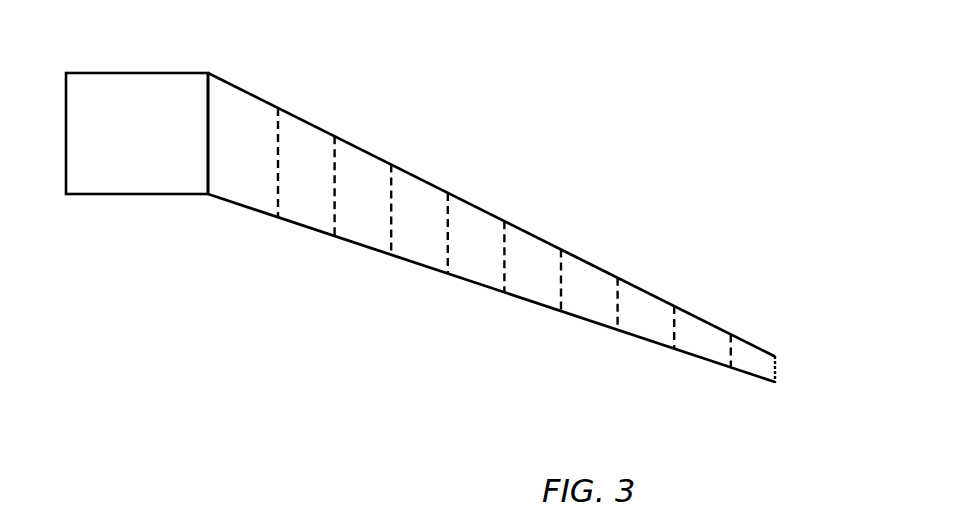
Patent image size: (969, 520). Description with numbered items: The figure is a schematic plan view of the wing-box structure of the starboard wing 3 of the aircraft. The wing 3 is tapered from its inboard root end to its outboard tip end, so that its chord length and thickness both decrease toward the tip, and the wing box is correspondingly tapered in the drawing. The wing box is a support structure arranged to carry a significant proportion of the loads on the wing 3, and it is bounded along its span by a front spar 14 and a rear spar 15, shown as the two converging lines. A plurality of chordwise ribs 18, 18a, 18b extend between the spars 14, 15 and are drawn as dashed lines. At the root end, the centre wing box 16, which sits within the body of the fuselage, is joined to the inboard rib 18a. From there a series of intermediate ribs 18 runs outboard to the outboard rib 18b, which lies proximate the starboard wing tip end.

The starboard wing 3 is at (262, 317).
The front spar 14 is at (437, 187).
The rear spar 15 is at (424, 268).
The centre wing box 16 is at (140, 165).
The intermediate ribs 18 is at (280, 132).
The inboard rib 18a is at (210, 110).
The outboard rib 18b is at (769, 376).